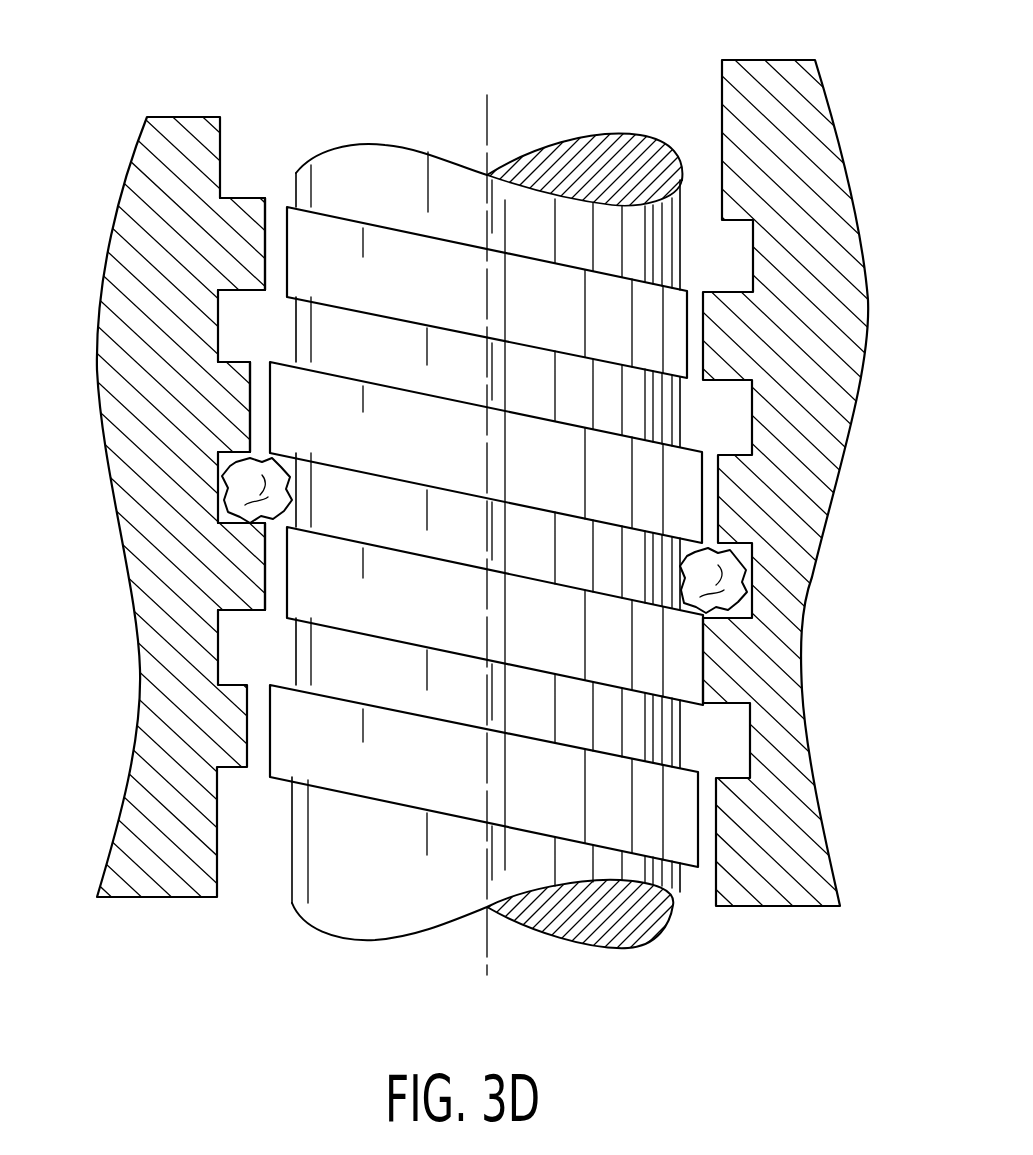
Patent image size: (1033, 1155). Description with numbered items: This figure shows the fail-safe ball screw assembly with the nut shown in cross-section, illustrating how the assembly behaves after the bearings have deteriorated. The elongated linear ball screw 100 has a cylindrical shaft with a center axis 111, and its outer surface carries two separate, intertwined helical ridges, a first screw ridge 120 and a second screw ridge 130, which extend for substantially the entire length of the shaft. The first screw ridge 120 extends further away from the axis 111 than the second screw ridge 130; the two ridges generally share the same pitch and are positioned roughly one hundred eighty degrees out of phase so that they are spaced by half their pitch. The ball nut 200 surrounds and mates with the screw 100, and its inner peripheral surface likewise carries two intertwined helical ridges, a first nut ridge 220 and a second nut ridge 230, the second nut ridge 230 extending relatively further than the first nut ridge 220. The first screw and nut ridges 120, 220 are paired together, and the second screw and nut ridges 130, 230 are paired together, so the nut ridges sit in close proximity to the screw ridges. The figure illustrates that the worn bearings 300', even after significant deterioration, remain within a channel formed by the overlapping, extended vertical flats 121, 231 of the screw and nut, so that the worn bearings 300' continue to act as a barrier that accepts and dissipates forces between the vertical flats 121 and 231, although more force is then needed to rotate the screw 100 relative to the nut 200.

The linear ball screw 100 is at (486, 568).
The center axis 111 is at (487, 125).
The first screw ridge 120 is at (486, 537).
The screw vertical flat 121 is at (285, 455).
The second screw ridge 130 is at (615, 275).
The ball nut 200 is at (195, 117).
The first nut ridge 220 is at (250, 372).
The second nut ridge 230 is at (265, 198).
The nut vertical flat 231 is at (237, 528).
The worn bearings 300' is at (206, 427).